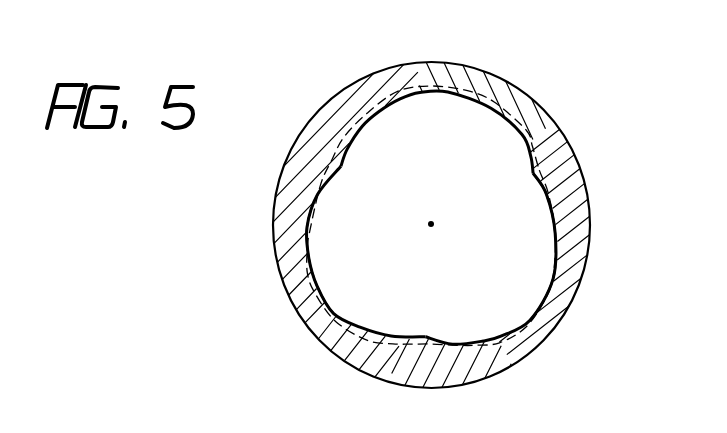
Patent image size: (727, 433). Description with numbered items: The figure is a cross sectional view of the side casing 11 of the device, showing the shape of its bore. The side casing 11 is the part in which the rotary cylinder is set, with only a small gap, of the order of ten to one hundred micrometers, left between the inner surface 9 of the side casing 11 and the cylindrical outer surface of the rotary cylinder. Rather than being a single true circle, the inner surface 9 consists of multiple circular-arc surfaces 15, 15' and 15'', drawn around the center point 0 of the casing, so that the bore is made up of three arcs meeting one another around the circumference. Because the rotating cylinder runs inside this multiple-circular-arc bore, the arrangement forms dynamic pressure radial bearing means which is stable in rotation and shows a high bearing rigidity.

The circular-arc surface 15 is at (431, 178).
The circular-arc surface 15' is at (587, 246).
The circular-arc surface 15'' is at (268, 254).
The inner surface 9 is at (556, 121).
The side casing 11 is at (589, 201).
The center point of the ring 0 is at (422, 211).